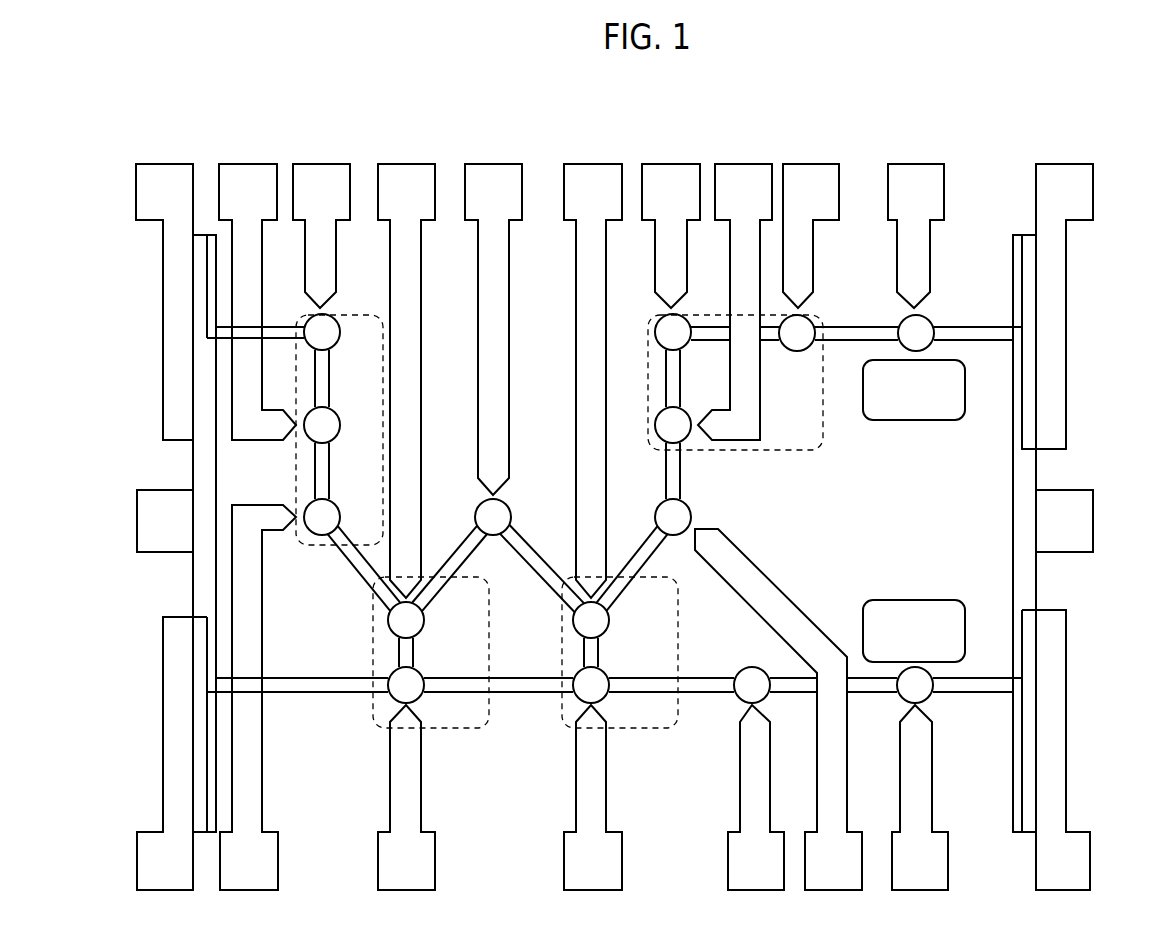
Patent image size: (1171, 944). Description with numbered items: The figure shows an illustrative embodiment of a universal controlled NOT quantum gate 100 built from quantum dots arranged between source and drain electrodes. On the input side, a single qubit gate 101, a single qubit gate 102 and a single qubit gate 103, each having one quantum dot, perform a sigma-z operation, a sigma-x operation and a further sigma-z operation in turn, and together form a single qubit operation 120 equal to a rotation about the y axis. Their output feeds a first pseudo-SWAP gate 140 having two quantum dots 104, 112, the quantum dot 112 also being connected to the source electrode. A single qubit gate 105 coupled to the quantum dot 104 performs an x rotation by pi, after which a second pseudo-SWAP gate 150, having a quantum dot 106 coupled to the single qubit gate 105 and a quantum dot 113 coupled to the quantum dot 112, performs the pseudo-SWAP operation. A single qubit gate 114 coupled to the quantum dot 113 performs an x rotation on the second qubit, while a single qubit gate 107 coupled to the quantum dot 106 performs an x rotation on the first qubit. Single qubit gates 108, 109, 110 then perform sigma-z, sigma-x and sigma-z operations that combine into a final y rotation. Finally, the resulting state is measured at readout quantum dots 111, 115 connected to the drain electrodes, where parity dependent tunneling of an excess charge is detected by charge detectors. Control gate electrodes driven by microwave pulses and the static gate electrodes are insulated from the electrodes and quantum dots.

The universal controlled NOT (CNOT) quantum gate 100 is at (1080, 140).
The single qubit gate 101 is at (340, 333).
The single qubit gate 102 is at (341, 421).
The single qubit gate 103 is at (341, 513).
The quantum dot 104 is at (388, 620).
The single qubit gate 105 is at (506, 509).
The quantum dot 106 is at (573, 620).
The single qubit gate 107 is at (690, 510).
The single qubit gate 108 is at (657, 433).
The single qubit gate 109 is at (656, 314).
The single qubit gate 110 is at (812, 317).
The quantum dot for charge detection 111 is at (931, 317).
The quantum dot 112 is at (420, 700).
The quantum dot 113 is at (605, 700).
The single qubit gate 114 is at (765, 700).
The quantum dot for charge detection 115 is at (930, 700).
The single qubit operation 120 is at (296, 478).
The U2(1/2) pseudo-SWAP gate 140 is at (373, 650).
The U2(1/2) pseudo-SWAP gate 150 is at (680, 631).